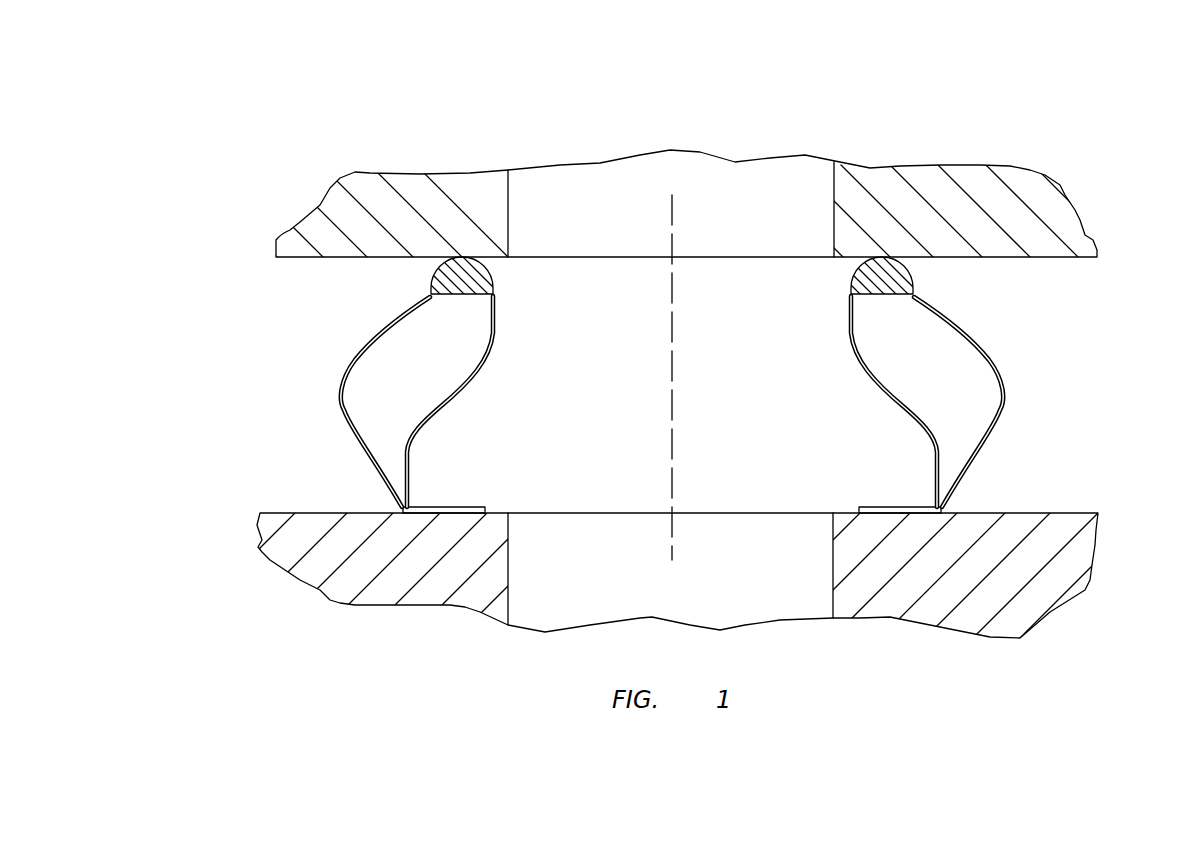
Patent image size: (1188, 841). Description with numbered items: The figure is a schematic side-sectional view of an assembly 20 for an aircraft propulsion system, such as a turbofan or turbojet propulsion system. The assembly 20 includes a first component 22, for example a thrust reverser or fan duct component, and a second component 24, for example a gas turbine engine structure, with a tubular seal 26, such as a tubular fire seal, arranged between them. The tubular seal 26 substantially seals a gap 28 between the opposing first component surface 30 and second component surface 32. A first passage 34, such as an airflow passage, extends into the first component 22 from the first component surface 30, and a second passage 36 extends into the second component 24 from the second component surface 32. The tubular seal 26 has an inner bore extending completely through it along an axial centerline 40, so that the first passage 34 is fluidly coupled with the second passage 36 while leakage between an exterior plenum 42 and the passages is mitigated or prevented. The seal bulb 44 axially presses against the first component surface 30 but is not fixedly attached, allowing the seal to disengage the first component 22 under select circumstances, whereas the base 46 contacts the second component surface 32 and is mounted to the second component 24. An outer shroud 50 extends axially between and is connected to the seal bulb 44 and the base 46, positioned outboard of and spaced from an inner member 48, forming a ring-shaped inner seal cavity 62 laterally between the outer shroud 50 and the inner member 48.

The assembly 20 is at (1078, 105).
The first component 22 is at (285, 212).
The second component 24 is at (243, 543).
The tubular seal 26 is at (316, 381).
The gap 28 is at (1068, 376).
The first component surface 30 is at (1068, 257).
The second component surface 32 is at (1083, 513).
The first passage 34 is at (699, 203).
The second passage 36 is at (708, 597).
The axial centerline 40 is at (665, 452).
The exterior plenum 42 is at (1125, 347).
The seal bulb 44 is at (493, 279).
The base 46 is at (481, 508).
The inner member 48 is at (478, 371).
The outer shroud 50 is at (357, 440).
The inner seal cavity 62 is at (393, 394).